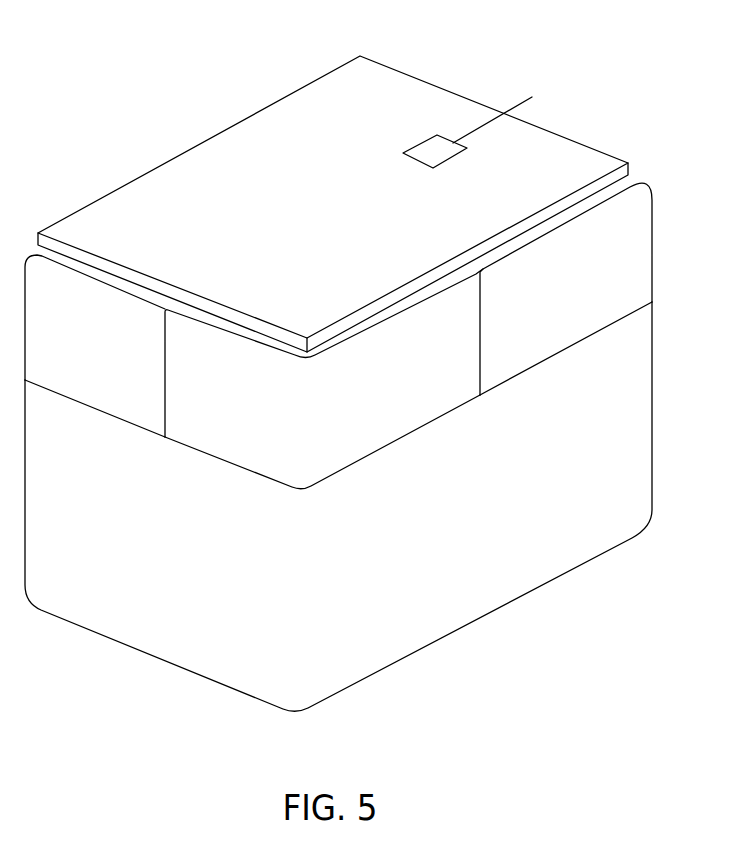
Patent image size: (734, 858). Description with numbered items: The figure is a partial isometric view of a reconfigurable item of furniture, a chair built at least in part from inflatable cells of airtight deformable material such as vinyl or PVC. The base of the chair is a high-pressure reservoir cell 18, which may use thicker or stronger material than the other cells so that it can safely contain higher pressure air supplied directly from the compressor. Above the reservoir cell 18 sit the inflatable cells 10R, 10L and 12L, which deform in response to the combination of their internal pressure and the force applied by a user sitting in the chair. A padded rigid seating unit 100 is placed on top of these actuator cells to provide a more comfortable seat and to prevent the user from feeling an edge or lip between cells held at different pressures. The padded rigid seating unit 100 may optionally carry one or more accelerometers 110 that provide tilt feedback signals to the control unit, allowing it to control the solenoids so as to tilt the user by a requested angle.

The padded rigid seating unit 100 is at (377, 112).
The accelerometer 110 is at (452, 158).
The inflatable cell 10R is at (118, 357).
The inflatable cell 10L is at (327, 421).
The inflatable cell 12L is at (582, 294).
The high-pressure reservoir cell 18 is at (483, 503).